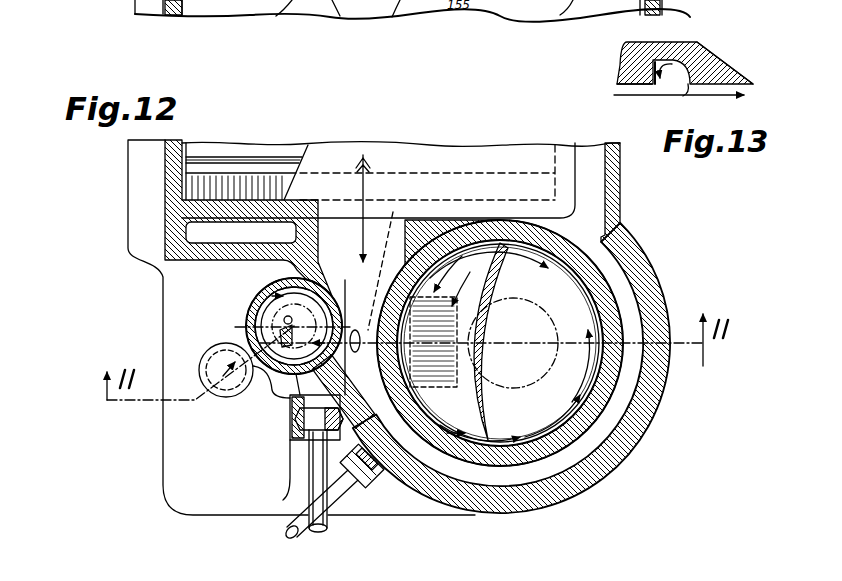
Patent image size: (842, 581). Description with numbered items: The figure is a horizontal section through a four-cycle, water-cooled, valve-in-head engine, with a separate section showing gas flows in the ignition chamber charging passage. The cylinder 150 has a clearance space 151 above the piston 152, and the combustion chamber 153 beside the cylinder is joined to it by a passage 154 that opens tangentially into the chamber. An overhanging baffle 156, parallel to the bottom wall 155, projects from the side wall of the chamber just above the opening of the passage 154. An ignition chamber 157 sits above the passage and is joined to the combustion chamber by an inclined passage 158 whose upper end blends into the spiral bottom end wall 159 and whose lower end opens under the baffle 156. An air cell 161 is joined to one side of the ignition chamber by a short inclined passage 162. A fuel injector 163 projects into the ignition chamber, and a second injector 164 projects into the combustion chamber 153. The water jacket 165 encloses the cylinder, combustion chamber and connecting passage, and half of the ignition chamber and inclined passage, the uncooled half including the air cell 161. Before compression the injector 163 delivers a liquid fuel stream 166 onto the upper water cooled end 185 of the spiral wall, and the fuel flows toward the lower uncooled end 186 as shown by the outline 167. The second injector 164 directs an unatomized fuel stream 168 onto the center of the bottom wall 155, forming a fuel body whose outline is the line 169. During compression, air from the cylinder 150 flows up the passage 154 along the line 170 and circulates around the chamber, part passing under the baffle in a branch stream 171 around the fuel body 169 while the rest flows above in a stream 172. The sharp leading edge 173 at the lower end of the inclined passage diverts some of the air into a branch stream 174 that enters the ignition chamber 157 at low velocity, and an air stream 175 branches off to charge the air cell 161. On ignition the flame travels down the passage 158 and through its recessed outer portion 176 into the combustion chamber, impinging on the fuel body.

In FIG. 12, the cylinder 150 is at (182, 181).
In FIG. 12, the clearance space 151 is at (265, 185).
In FIG. 12, the piston 152 is at (236, 156).
In FIG. 12, the combustion chamber 153 is at (622, 310).
In FIG. 12, the passage 154 is at (383, 272).
In FIG. 13, the passage 154 is at (752, 96).
In FIG. 12, the bottom wall 155 is at (568, 308).
In FIG. 12, the baffle 156 is at (472, 316).
In FIG. 12, the ignition chamber 157 is at (256, 284).
In FIG. 12, the inclined passage 158 is at (349, 391).
In FIG. 13, the inclined passage 158 is at (673, 60).
In FIG. 12, the spiral bottom end wall 159 is at (288, 275).
In FIG. 12, the air cell 161 is at (213, 398).
In FIG. 12, the short inclined passage 162 is at (240, 342).
In FIG. 12, the fuel injector 163 is at (294, 455).
In FIG. 12, the second injector 164 is at (370, 505).
In FIG. 12, the water jacket 165 is at (292, 508).
In FIG. 12, the stream of liquid fuel 166 is at (271, 384).
In FIG. 12, the fuel outline 167 is at (316, 290).
In FIG. 12, the unatomized stream of fuel 168 is at (471, 376).
In FIG. 12, the fuel body outline 169 is at (541, 352).
In FIG. 12, the air flow line 170 is at (368, 197).
In FIG. 13, the air flow line 170 is at (643, 97).
In FIG. 12, the branch stream 171 is at (474, 276).
In FIG. 12, the stream 172 is at (492, 246).
In FIG. 13, the sharp leading edge 173 is at (627, 60).
In FIG. 12, the branch stream 174 is at (241, 299).
In FIG. 13, the branch stream 174 is at (703, 62).
In FIG. 12, the air stream 175 is at (205, 365).
In FIG. 12, the recessed outer portion 176 is at (412, 363).
In FIG. 12, the upper water cooled end 185 is at (338, 294).
In FIG. 12, the lower uncooled end 186 is at (270, 319).